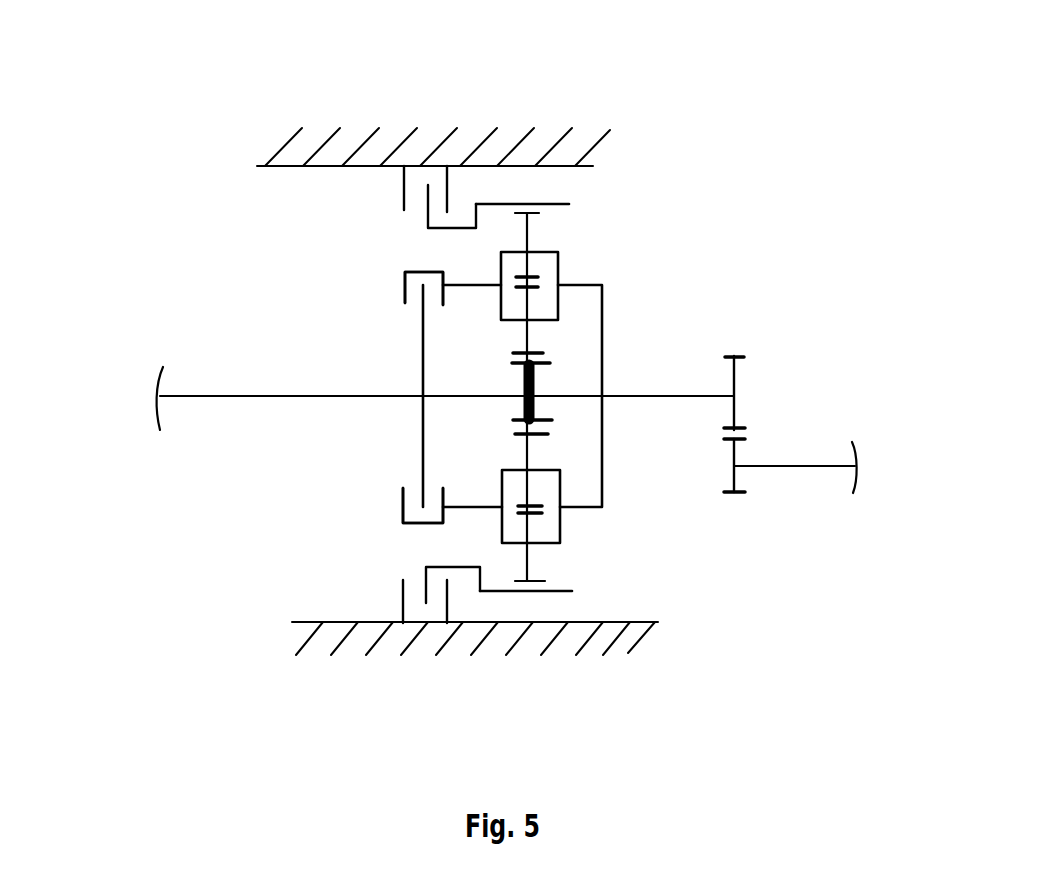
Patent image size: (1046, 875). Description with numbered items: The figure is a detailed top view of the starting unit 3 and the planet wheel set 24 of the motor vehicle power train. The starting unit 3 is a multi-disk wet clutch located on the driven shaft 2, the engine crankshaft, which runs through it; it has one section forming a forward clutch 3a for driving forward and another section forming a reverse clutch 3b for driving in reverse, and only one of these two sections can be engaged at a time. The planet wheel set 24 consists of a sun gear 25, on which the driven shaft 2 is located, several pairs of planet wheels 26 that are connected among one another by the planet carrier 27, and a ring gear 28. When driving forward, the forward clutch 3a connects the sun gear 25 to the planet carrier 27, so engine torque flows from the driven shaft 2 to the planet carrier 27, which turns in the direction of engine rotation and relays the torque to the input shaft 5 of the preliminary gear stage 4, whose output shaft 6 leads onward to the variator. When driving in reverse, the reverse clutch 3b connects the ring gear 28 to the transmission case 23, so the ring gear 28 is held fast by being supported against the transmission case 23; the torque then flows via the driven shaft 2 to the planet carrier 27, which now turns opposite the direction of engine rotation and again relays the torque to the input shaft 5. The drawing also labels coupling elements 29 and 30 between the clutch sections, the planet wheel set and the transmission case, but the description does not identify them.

The driven shaft 2 is at (275, 385).
The starting unit 3 is at (385, 350).
The forward clutch 3a is at (390, 273).
The reverse clutch 3b is at (393, 182).
The preliminary gear stage 4 is at (762, 428).
The input shaft 5 is at (707, 387).
The output shaft 6 is at (770, 473).
The transmission case 23 is at (575, 173).
The planet wheel set 24 is at (582, 258).
The sun gear 25 is at (517, 407).
The planet wheels 26 is at (521, 227).
The planet carrier 27 is at (612, 327).
The ring gear 28 is at (513, 199).
The coupling bracket 29 is at (450, 277).
The locking lug 30 is at (457, 213).